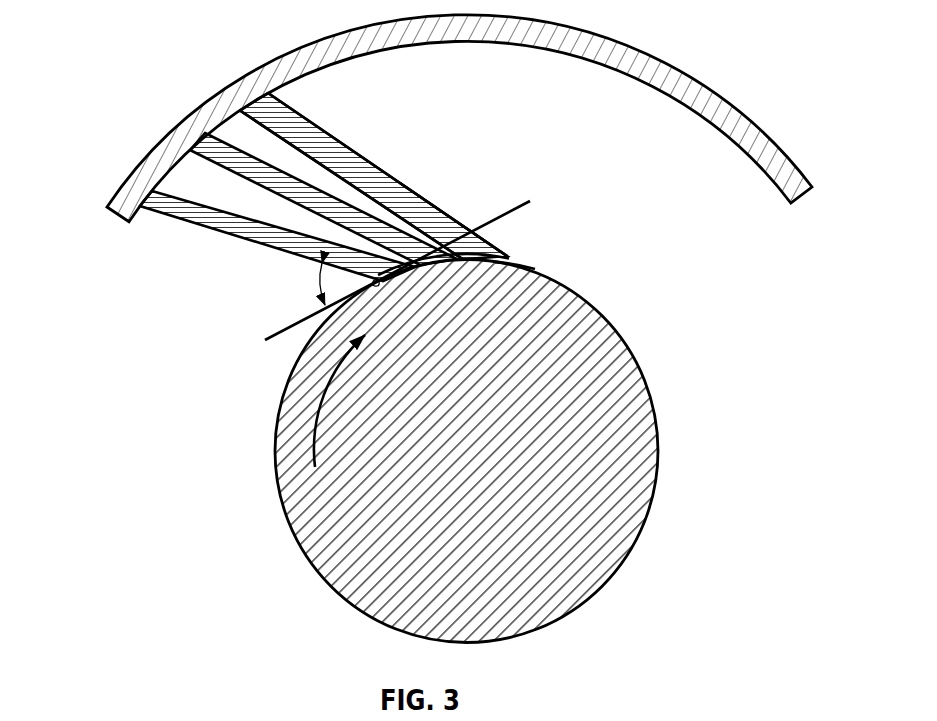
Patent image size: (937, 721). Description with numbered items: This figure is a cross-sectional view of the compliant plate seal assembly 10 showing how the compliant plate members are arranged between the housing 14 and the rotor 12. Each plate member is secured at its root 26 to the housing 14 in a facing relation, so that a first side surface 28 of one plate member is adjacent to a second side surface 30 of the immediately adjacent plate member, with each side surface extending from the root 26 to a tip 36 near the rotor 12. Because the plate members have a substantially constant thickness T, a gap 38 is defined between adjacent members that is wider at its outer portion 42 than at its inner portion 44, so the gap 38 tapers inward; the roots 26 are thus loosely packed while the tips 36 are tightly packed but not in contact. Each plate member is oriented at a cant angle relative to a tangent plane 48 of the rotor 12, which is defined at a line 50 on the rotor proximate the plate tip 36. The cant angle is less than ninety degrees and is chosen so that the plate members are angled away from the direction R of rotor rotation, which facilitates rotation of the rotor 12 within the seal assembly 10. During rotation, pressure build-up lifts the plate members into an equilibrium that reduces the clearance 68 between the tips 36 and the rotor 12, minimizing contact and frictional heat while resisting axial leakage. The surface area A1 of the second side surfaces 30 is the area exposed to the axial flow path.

The compliant plate seal assembly 10 is at (117, 34).
The rotor 12 is at (482, 461).
The housing 14 is at (703, 92).
The root 26 is at (298, 113).
The first side surface 28 is at (422, 195).
The second side surface 30 is at (315, 156).
The tip 36 is at (488, 250).
The gap 38 is at (241, 134).
The outer portion 42 is at (207, 193).
The inner portion 44 is at (434, 206).
The tangent plane 48 is at (515, 203).
The line 50 is at (378, 286).
The clearance 68 is at (518, 265).
The thickness T is at (344, 204).
The surface area A1 is at (271, 247).
The direction of rotation R is at (318, 417).